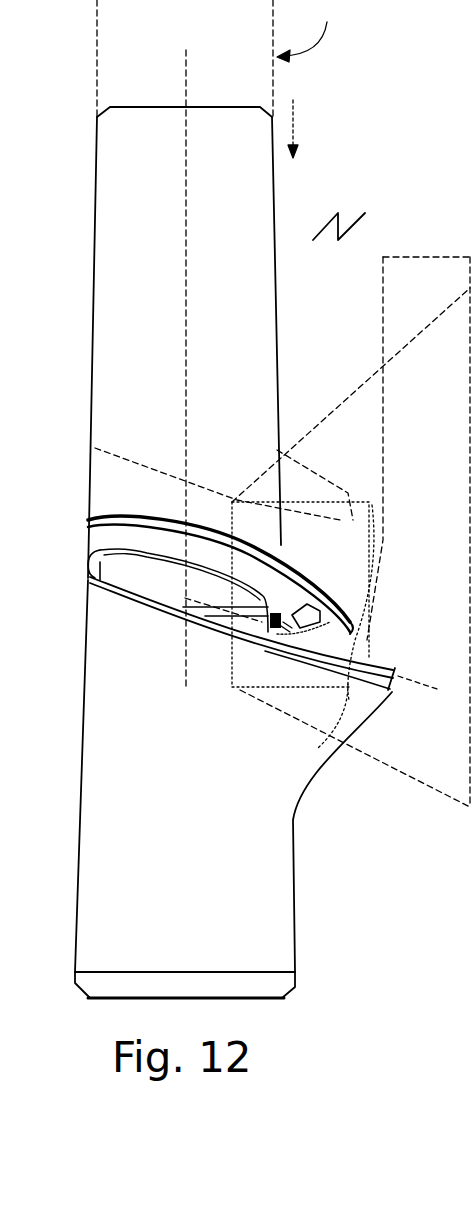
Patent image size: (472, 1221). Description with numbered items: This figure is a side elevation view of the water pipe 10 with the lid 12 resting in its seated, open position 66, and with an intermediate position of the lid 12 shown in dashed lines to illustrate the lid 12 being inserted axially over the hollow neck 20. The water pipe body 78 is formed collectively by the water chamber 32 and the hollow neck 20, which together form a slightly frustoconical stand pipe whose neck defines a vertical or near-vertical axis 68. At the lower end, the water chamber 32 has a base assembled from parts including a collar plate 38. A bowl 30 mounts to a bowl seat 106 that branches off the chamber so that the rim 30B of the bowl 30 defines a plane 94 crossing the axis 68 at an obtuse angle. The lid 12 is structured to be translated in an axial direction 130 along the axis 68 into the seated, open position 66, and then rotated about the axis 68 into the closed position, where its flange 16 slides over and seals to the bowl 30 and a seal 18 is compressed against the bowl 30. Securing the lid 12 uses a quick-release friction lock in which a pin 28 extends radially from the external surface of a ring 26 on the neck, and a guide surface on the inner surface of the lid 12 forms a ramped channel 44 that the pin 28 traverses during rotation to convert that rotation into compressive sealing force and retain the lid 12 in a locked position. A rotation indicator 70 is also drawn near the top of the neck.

The water pipe 10 is at (357, 218).
The lid 12 is at (278, 298).
The flange 16 is at (300, 582).
The seal 18 is at (342, 728).
The hollow neck 20 is at (133, 573).
The ring 26 is at (252, 628).
The pin 28 is at (275, 628).
The bowl 30 is at (381, 666).
The rim 30B is at (381, 663).
The water chamber 32 is at (300, 875).
The collar plate 38 is at (293, 990).
The channel 44 is at (312, 620).
The seated, open position 66 is at (89, 486).
The axis 68 is at (187, 270).
The rotation direction 70 is at (312, 31).
The water pipe body 78 is at (340, 752).
The plane 94 is at (428, 682).
The bowl seat 106 is at (388, 693).
The axial direction 130 is at (293, 123).